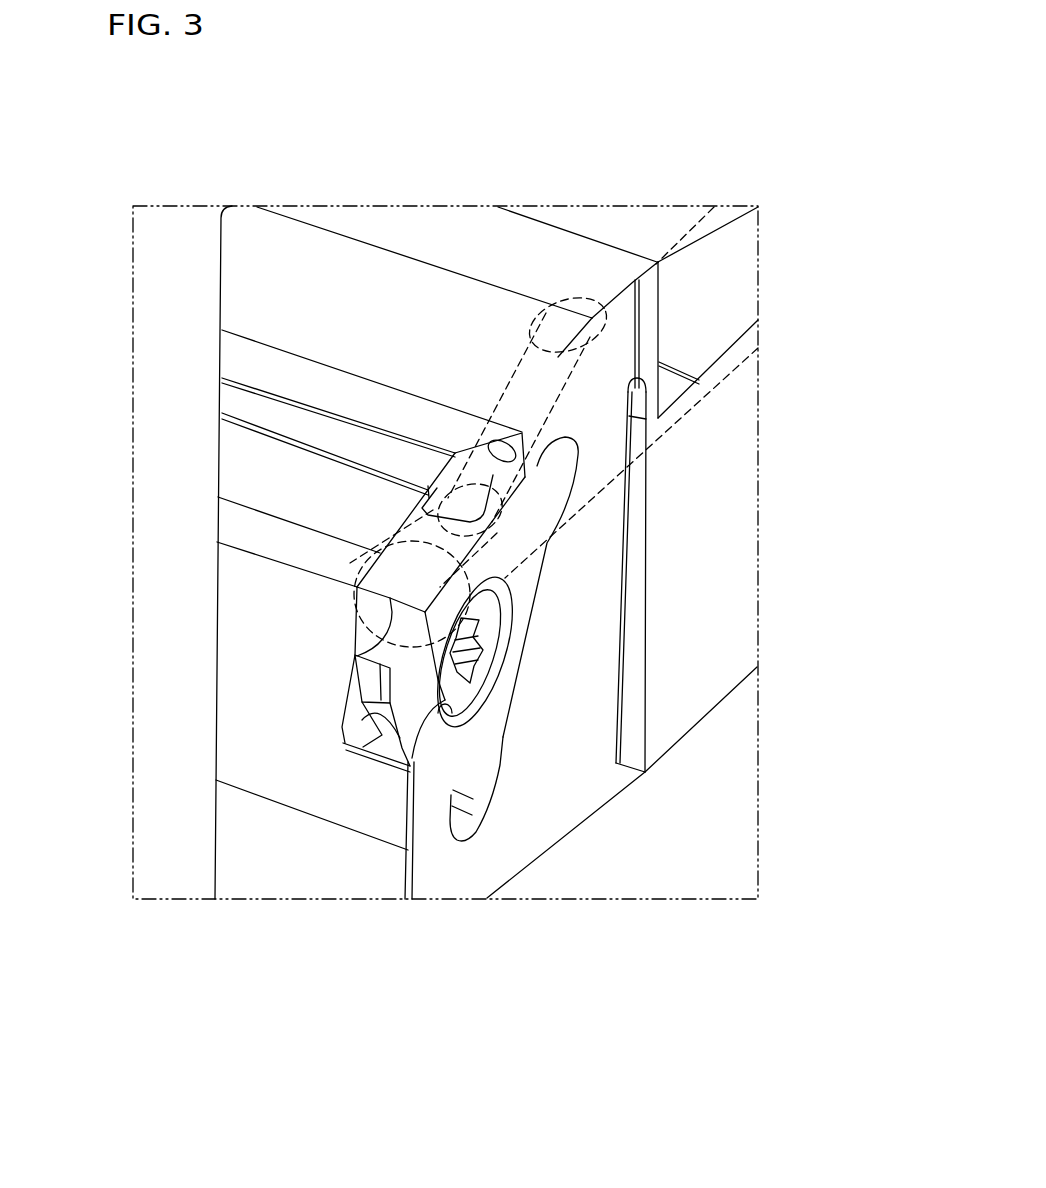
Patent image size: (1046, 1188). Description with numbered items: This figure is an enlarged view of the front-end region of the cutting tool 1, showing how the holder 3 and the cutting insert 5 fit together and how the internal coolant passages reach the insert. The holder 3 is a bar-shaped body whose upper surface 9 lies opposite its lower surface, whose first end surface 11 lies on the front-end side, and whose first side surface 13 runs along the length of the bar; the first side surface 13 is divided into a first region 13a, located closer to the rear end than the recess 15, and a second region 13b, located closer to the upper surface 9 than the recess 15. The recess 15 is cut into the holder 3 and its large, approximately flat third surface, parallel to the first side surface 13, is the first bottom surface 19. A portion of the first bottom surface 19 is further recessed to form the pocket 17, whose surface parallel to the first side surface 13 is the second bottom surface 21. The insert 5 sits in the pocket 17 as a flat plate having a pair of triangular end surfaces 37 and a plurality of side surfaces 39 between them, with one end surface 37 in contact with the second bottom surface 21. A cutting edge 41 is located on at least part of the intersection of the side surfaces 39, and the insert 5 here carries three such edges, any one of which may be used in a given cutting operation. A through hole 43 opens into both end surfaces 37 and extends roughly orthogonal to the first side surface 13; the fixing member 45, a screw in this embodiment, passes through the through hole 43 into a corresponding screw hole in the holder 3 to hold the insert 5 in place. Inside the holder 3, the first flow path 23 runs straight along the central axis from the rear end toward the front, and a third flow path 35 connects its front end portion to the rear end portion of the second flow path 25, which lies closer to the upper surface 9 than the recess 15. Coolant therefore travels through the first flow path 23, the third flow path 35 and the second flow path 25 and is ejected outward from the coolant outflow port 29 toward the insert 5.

The cutting tool 1 is at (302, 163).
The holder 3 is at (462, 508).
The upper surface 9 is at (455, 229).
The first end surface 11 is at (280, 600).
The first side surface 13 is at (630, 387).
The first region 13a is at (702, 503).
The second region 13b is at (645, 320).
The cutting insert 5 is at (455, 659).
The end surfaces 37 is at (468, 758).
The side surfaces 39 is at (370, 687).
The cutting edge 41 is at (537, 463).
The through hole 43 is at (407, 760).
The recess 15 is at (704, 575).
The first bottom surface 19 is at (585, 603).
The pocket 17 is at (584, 797).
The second bottom surface 21 is at (403, 656).
The first flow path 23 is at (672, 432).
The second flow path 25 is at (617, 350).
The coolant outflow port 29 is at (456, 455).
The third flow path 35 is at (503, 373).
The fixing member 45 is at (478, 667).